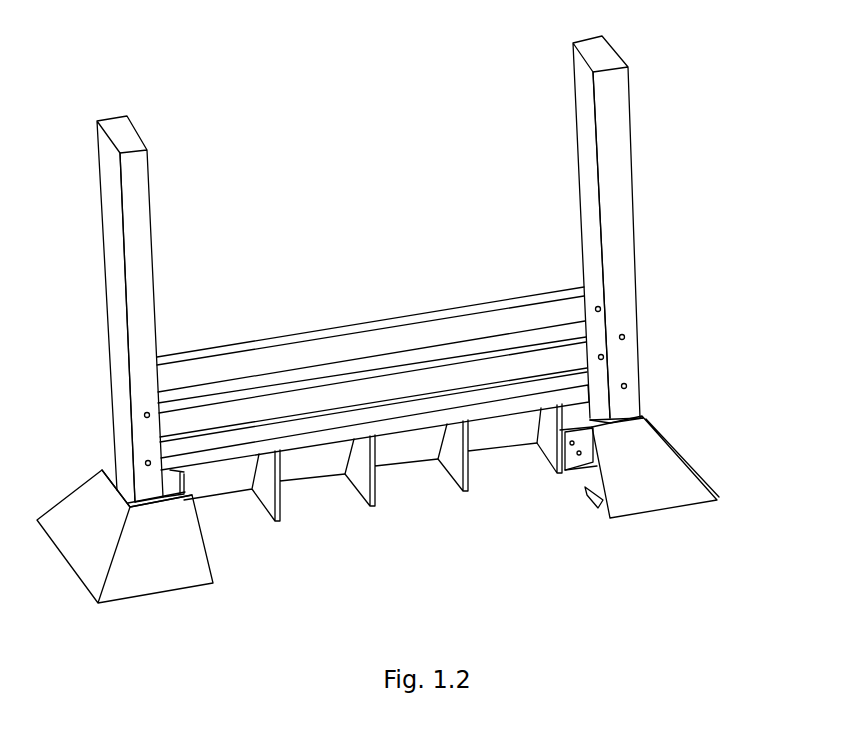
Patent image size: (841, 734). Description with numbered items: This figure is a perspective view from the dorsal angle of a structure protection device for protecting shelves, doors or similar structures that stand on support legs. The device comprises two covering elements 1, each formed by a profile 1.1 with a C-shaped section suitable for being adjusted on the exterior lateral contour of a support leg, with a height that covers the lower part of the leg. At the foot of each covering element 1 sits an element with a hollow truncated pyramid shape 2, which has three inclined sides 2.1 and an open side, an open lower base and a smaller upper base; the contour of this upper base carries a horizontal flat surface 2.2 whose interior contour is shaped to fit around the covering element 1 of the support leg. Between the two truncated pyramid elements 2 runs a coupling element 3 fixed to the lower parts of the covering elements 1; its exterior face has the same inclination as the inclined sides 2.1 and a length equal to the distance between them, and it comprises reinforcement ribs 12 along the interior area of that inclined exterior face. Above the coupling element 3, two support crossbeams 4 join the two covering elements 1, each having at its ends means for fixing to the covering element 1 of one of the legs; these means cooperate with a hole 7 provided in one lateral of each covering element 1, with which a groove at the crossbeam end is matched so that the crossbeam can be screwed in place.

The covering element 1 is at (370, 269).
The profile 1.1 is at (113, 313).
The element with a hollow truncated pyramid shape 2 is at (391, 492).
The inclined side 2.1 is at (138, 533).
The horizontal flat surface 2.2 is at (117, 477).
The coupling element 3 is at (205, 458).
The support crossbeam 4 is at (358, 397).
The hole 7 is at (599, 354).
The reinforcement ribs 12 is at (377, 488).